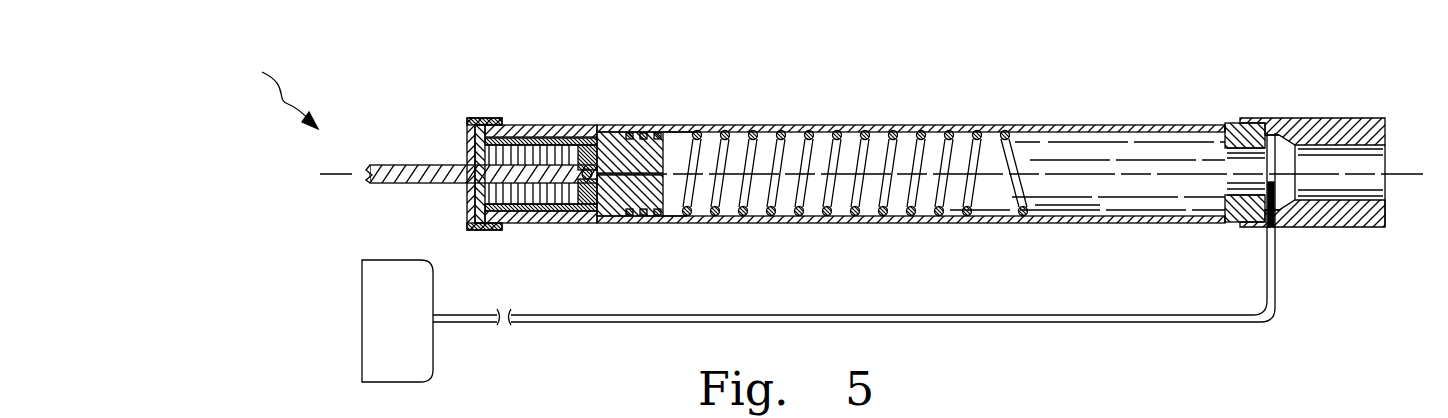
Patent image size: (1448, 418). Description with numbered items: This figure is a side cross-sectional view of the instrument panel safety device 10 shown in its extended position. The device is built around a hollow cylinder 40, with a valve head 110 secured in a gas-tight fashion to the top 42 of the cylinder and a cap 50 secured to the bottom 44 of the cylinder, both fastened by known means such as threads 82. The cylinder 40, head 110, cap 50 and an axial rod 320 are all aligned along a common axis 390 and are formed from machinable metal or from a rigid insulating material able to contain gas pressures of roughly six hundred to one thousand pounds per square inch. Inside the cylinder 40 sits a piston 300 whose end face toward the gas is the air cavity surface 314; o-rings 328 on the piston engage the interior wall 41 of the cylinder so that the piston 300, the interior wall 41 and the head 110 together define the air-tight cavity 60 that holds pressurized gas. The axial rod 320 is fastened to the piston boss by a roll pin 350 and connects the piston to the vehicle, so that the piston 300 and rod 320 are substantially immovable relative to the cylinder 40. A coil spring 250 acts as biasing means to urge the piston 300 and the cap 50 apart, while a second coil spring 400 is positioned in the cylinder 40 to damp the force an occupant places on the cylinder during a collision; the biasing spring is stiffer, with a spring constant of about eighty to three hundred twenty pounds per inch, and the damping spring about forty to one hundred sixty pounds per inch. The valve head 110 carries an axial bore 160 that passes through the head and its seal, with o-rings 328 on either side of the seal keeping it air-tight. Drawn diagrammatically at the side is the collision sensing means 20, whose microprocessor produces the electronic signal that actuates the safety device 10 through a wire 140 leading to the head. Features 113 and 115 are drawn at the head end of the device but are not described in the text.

The instrument panel safety device 10 is at (277, 90).
The collision sensing means 20 is at (361, 318).
The hollow cylinder 40 is at (938, 128).
The interior wall of cylinder 41 is at (815, 216).
The top of cylinder 42 is at (1228, 198).
The bottom of cylinder 44 is at (482, 120).
The cap 50 is at (470, 218).
The air-tight cavity 60 is at (827, 135).
The threads 82 is at (1238, 224).
The valve head 110 is at (1295, 229).
The cap end face 113 is at (1387, 229).
The barrel end 115 is at (1220, 122).
The wire 140 is at (1150, 324).
The axial bore 160 is at (1388, 150).
The coil spring 250 is at (535, 145).
The piston 300 is at (610, 218).
The air cavity surface 314 is at (676, 135).
The axial rod 320 is at (420, 165).
The o-ring 328 is at (657, 217).
The roll pin 350 is at (572, 138).
The axis 390 is at (1421, 176).
The coil spring 400 is at (960, 212).